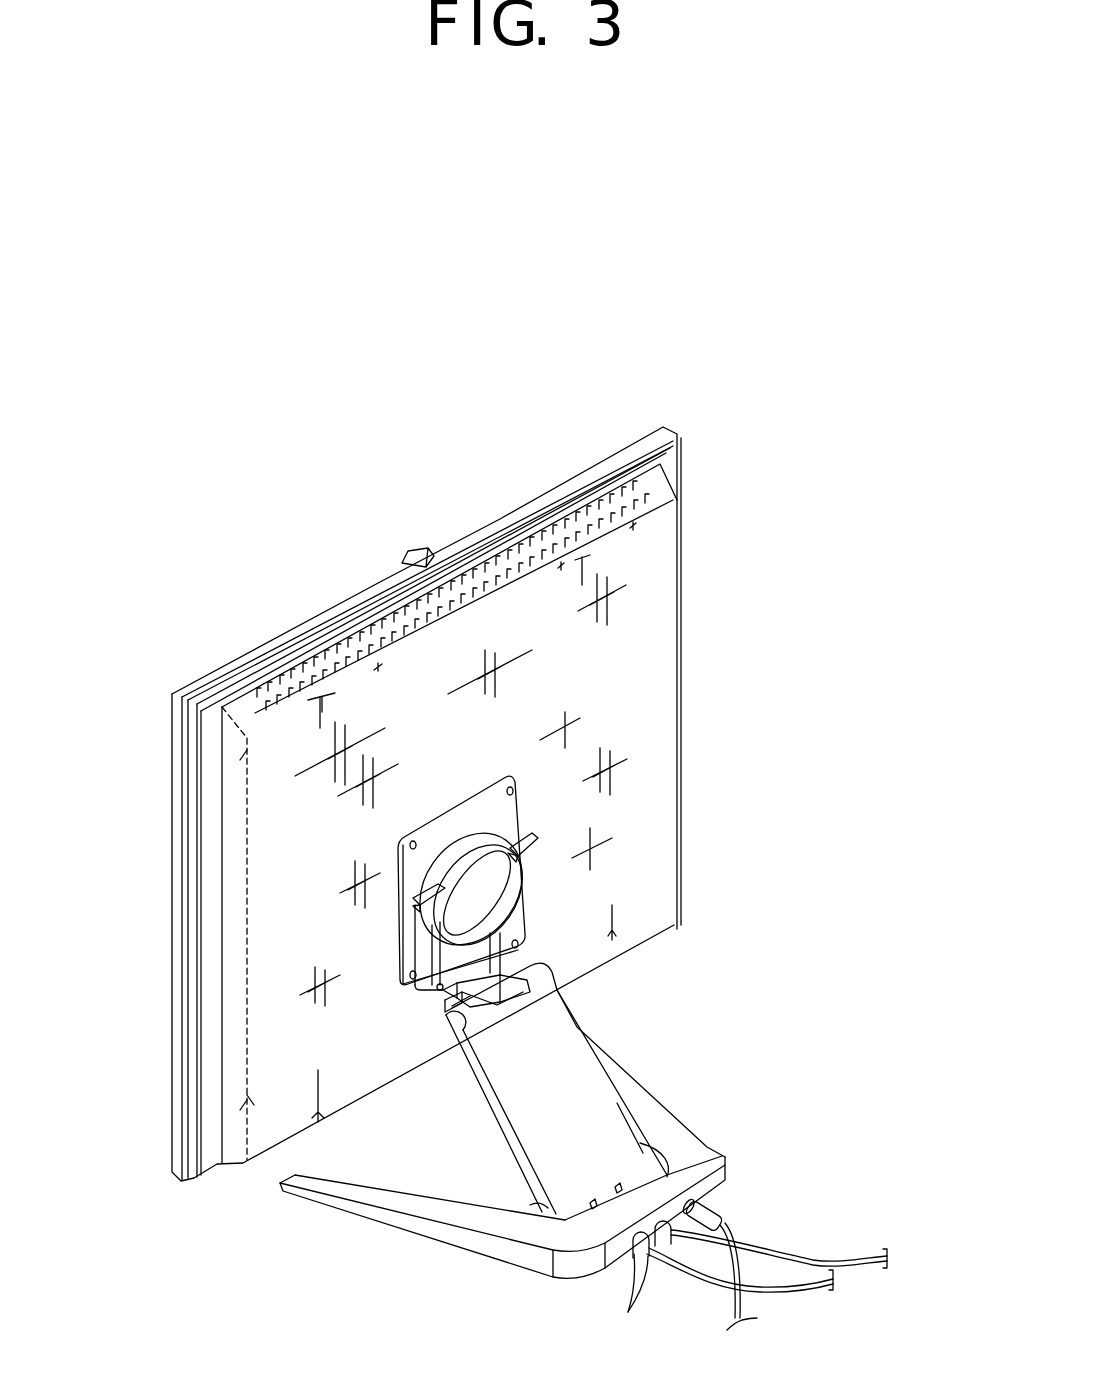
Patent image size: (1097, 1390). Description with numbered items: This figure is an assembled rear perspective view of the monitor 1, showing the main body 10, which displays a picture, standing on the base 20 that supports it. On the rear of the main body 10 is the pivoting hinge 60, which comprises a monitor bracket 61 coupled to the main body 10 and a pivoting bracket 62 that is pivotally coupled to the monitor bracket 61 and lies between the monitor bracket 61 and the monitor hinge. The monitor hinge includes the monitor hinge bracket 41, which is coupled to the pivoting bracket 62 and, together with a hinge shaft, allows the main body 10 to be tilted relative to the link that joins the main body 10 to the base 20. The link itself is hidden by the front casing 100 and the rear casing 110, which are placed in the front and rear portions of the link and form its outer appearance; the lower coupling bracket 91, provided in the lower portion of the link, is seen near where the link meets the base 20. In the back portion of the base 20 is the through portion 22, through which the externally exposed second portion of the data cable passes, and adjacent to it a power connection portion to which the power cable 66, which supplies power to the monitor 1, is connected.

The monitor 1 is at (773, 495).
The main body 10 is at (640, 645).
The base 20 is at (700, 1143).
The through portion 22 is at (757, 1287).
The monitor hinge bracket 41 is at (452, 1002).
The pivoting hinge 60 is at (753, 783).
The monitor bracket 61 is at (503, 812).
The pivoting bracket 62 is at (523, 867).
The power cable 66 is at (720, 1203).
The lower coupling bracket 91 is at (537, 1207).
The front casing 100 is at (458, 1025).
The rear casing 110 is at (570, 1065).